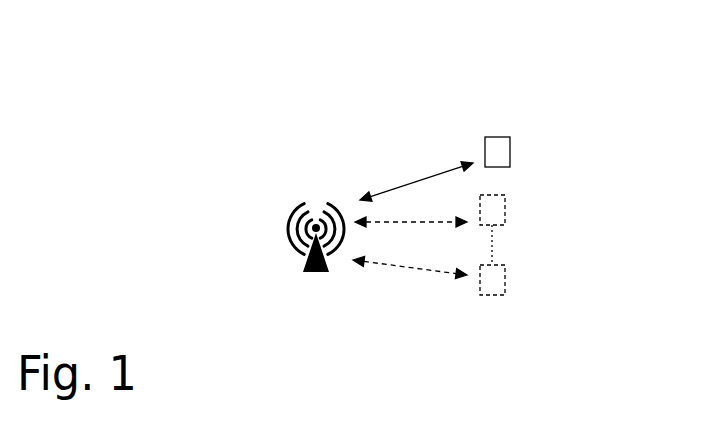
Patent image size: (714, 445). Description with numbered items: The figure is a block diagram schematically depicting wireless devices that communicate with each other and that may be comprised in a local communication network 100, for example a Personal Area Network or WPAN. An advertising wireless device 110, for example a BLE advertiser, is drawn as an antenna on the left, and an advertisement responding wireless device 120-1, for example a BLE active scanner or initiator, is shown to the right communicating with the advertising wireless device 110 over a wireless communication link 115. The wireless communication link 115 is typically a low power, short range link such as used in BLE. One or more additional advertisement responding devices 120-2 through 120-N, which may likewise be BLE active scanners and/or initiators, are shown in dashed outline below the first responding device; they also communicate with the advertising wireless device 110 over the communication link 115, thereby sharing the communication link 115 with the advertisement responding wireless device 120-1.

The local communication network 100 is at (293, 80).
The advertising wireless device 110 is at (305, 267).
The wireless communication link 115 is at (470, 298).
The advertisement responding wireless device 120-1 is at (510, 158).
The additional advertisement responding device 120-2 is at (505, 210).
The additional advertisement responding device 120-N is at (506, 277).